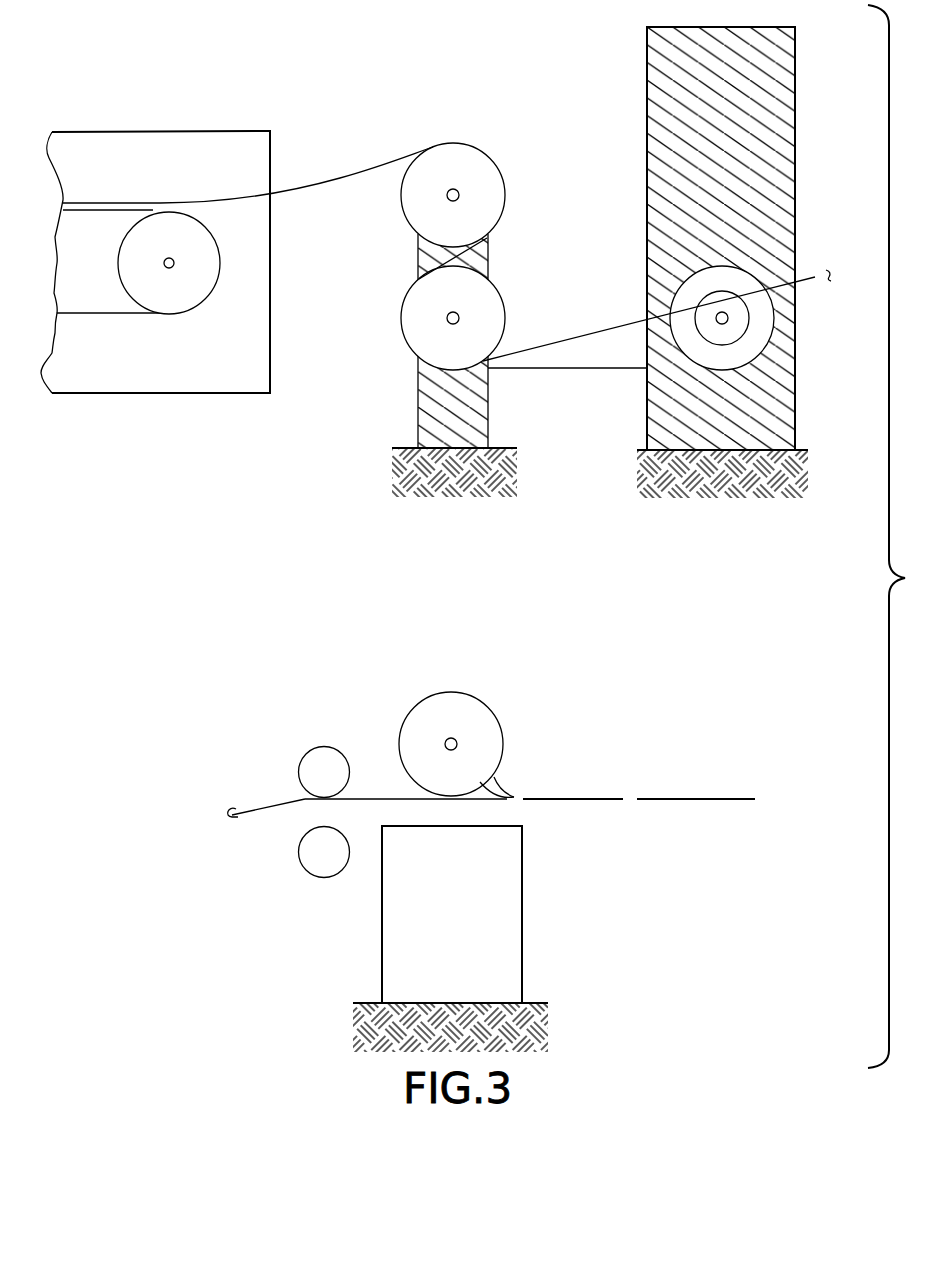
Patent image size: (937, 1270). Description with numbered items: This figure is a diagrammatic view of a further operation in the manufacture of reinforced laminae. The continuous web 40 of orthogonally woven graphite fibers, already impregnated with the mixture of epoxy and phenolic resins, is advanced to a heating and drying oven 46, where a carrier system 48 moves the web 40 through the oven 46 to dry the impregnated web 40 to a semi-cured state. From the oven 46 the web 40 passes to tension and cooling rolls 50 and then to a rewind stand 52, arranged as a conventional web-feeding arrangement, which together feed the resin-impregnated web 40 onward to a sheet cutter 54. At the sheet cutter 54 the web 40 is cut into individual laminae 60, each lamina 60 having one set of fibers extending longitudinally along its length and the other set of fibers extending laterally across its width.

The continuous web 40 is at (313, 198).
The heating and drying oven 46 is at (98, 395).
The carrier system 48 is at (78, 313).
The tension and cooling rolls 50 is at (412, 296).
The rewind stand 52 is at (790, 370).
The sheet cutter 54 is at (480, 692).
The laminae 60 is at (567, 798).